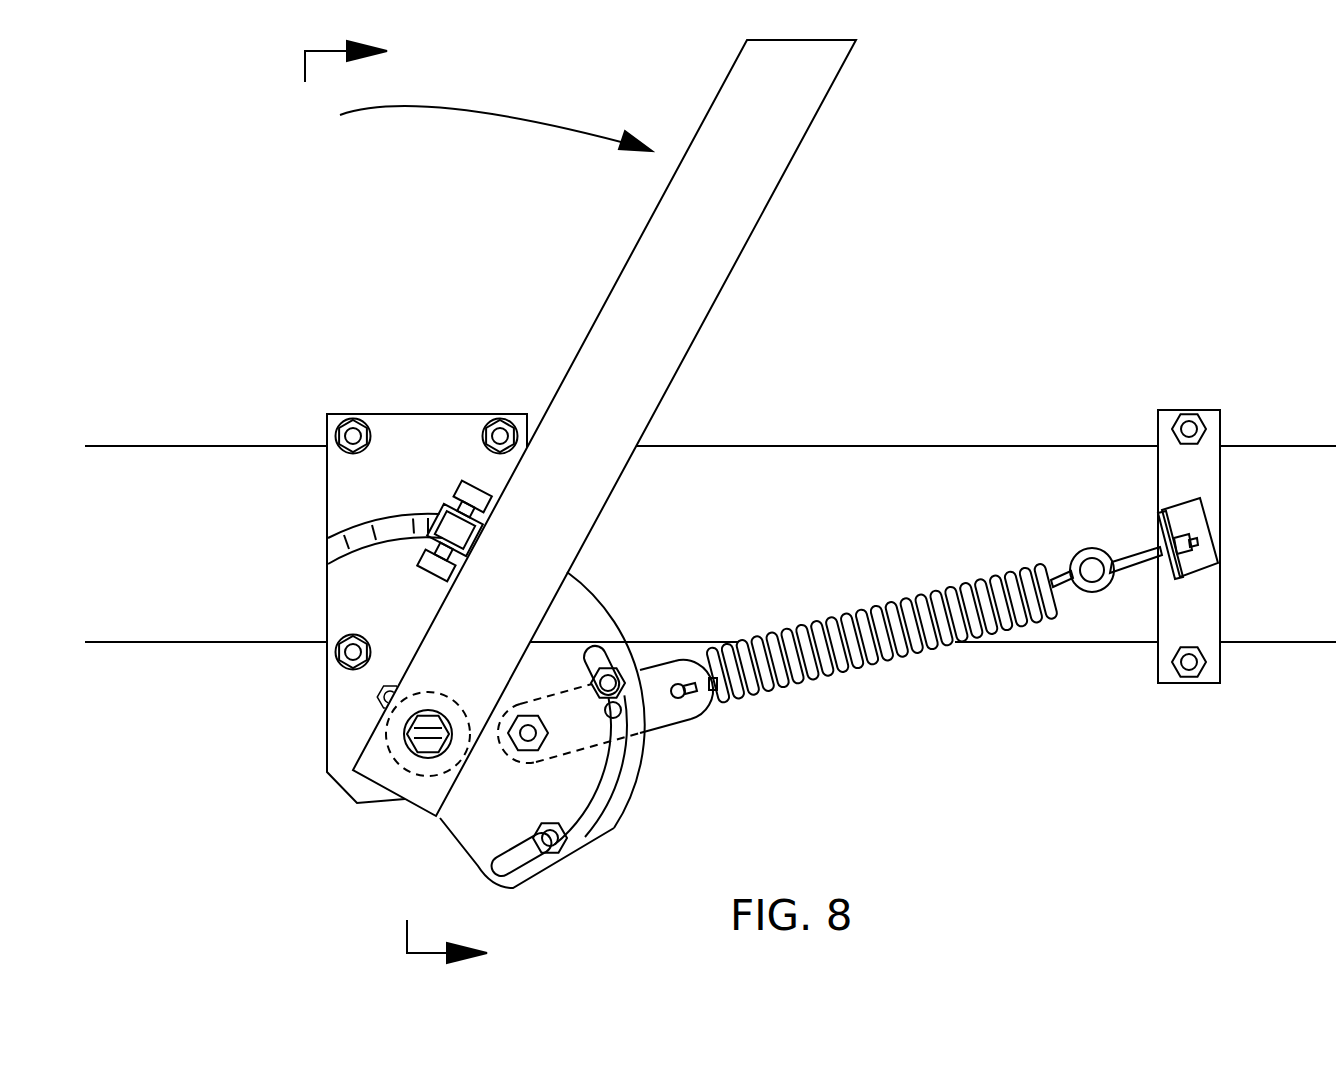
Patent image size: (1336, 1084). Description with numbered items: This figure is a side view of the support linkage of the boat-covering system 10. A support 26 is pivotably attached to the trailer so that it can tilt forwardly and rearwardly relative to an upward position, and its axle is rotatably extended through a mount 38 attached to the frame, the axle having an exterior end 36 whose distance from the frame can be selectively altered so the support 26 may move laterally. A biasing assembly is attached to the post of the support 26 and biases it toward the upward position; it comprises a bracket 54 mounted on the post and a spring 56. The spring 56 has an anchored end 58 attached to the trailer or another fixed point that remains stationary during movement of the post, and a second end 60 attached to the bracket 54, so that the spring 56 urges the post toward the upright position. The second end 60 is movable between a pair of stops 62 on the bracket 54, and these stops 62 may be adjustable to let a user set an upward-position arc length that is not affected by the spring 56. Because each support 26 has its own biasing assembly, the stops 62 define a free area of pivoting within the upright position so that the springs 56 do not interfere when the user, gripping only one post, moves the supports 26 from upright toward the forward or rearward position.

The system 10 is at (478, 502).
The support 26 is at (768, 276).
The exterior end 36 is at (426, 748).
The mount 38 is at (342, 737).
The bracket 54 is at (615, 803).
The spring 56 is at (882, 652).
The anchored end 58 is at (1165, 560).
The second end 60 is at (690, 700).
The stops 62 is at (628, 645).